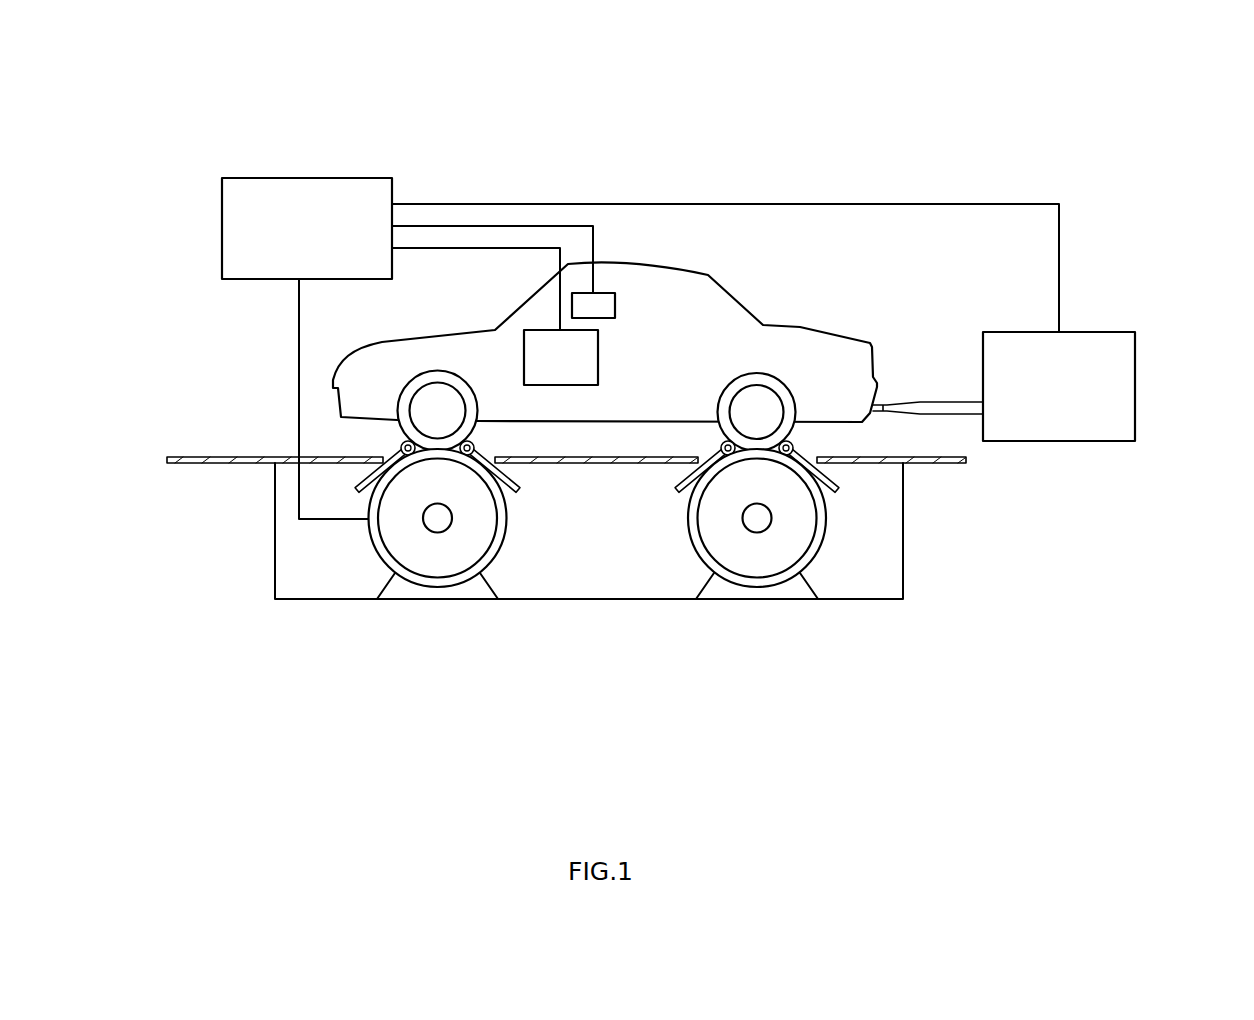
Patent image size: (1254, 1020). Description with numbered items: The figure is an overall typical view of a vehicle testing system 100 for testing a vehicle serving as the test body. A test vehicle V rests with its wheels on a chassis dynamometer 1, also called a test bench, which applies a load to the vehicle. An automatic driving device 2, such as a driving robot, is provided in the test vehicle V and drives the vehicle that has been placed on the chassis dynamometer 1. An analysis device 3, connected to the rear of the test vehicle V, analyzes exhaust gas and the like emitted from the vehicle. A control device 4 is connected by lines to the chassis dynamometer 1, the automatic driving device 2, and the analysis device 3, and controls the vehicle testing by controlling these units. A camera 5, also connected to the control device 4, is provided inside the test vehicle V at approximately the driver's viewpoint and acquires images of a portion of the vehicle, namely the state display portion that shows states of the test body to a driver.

The vehicle testing system 100 is at (794, 134).
The chassis dynamometer 1 is at (218, 555).
The automatic driving device 2 is at (598, 358).
The analysis device 3 is at (1135, 388).
The control device 4 is at (307, 178).
The camera 5 is at (616, 305).
The test vehicle V is at (848, 332).